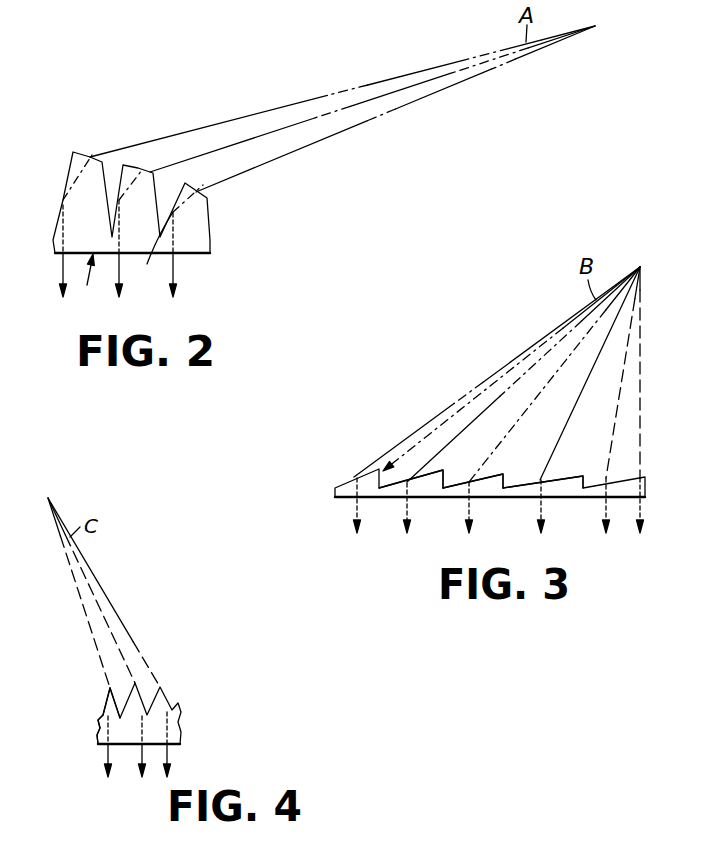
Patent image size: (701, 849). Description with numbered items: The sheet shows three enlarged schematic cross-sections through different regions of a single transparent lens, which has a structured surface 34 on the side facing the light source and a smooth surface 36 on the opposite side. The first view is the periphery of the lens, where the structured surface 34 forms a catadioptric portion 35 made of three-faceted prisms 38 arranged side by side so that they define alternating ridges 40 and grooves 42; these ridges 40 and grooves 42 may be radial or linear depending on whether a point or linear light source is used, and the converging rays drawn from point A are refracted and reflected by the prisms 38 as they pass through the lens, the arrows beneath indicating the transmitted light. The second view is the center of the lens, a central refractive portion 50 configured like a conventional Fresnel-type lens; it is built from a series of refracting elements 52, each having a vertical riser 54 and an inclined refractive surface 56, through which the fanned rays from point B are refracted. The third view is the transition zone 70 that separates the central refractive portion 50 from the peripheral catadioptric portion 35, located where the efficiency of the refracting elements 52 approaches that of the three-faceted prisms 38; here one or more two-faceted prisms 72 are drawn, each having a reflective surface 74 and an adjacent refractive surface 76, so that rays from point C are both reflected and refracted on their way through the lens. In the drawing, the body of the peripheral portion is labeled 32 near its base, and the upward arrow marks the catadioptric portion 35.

In FIG. 2, the blade body 32 is at (205, 243).
In FIG. 2, the structured surface 34 is at (120, 200).
In FIG. 2, the catadioptric portion 35 is at (85, 288).
In FIG. 2, the smooth surface 36 is at (203, 257).
In FIG. 2, the three-faceted prism 38 is at (197, 211).
In FIG. 2, the ridge 40 is at (62, 205).
In FIG. 2, the groove 42 is at (118, 222).
In FIG. 3, the central refractive portion 50 is at (566, 514).
In FIG. 3, the refracting element 52 is at (566, 470).
In FIG. 3, the riser 54 is at (503, 474).
In FIG. 3, the refractive surface 56 is at (489, 475).
In FIG. 4, the transition zone 70 is at (94, 756).
In FIG. 4, the two-faceted prism 72 is at (103, 712).
In FIG. 4, the reflective surface 74 is at (115, 687).
In FIG. 4, the refractive surface 76 is at (102, 703).